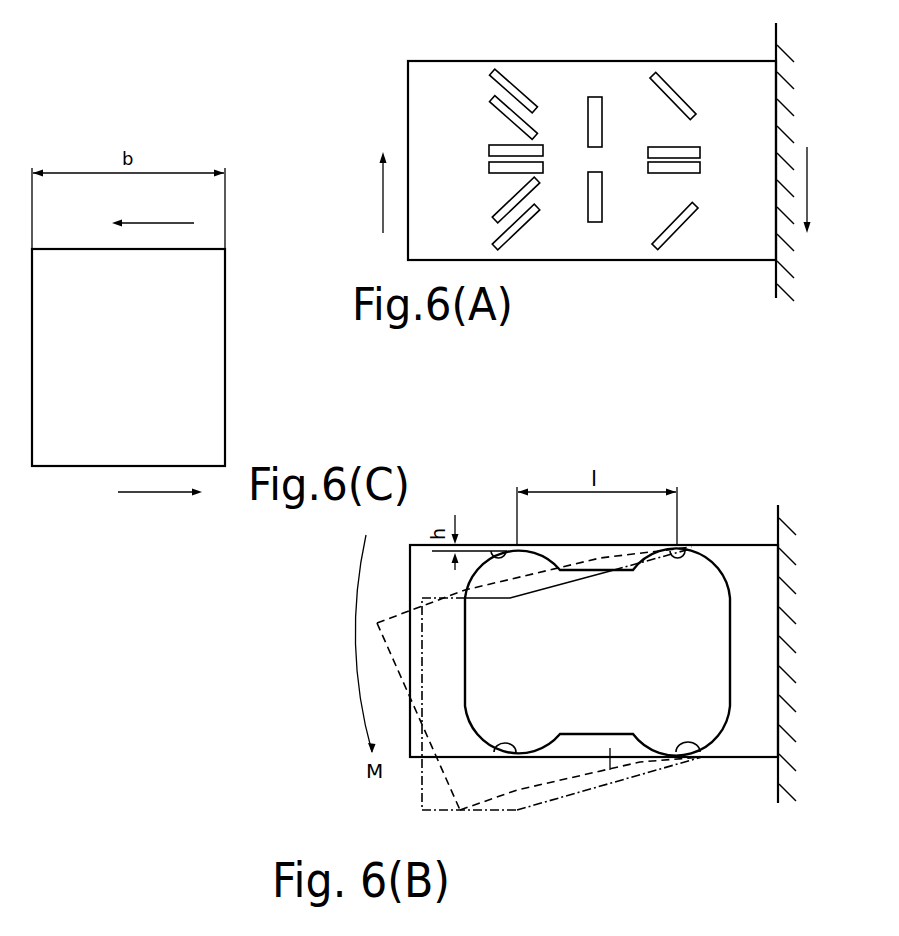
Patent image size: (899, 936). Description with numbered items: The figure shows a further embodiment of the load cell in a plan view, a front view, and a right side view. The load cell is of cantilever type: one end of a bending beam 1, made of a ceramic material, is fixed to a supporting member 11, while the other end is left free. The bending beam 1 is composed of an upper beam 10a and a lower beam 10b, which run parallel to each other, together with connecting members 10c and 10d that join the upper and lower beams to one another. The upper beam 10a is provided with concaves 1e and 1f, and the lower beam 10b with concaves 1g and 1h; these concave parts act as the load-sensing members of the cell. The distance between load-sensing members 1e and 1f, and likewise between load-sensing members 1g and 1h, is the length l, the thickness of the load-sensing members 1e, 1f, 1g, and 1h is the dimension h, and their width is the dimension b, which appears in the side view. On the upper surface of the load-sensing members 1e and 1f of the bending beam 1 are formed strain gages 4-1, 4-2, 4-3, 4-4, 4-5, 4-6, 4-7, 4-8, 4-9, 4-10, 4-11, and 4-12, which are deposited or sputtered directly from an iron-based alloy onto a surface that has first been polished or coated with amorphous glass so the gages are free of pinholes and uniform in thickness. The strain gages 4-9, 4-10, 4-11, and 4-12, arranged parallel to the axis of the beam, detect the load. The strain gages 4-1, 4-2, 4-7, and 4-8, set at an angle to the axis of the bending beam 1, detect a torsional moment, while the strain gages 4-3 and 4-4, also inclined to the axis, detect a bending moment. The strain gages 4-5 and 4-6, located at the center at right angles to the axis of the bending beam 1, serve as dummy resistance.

In FIG. 6A, the bending beam 1 is at (697, 49).
In FIG. 6C, the bending beam 1 is at (238, 421).
In FIG. 6B, the bending beam 1 is at (735, 538).
In FIG. 6A, the supporting member 11 is at (793, 127).
In FIG. 6B, the supporting member 11 is at (792, 600).
In FIG. 6A, the strain gage 4-1 is at (484, 89).
In FIG. 6A, the strain gage 4-2 is at (486, 227).
In FIG. 6A, the strain gage 4-3 is at (484, 118).
In FIG. 6A, the strain gage 4-4 is at (486, 200).
In FIG. 6A, the strain gage 4-5 is at (577, 112).
In FIG. 6A, the strain gage 4-6 is at (577, 197).
In FIG. 6A, the strain gage 4-7 is at (654, 94).
In FIG. 6A, the strain gage 4-8 is at (684, 225).
In FIG. 6A, the strain gage 4-9 is at (487, 151).
In FIG. 6A, the strain gage 4-10 is at (487, 167).
In FIG. 6A, the strain gage 4-11 is at (670, 139).
In FIG. 6A, the strain gage 4-12 is at (670, 181).
In FIG. 6B, the concave 1e is at (499, 560).
In FIG. 6B, the concave 1f is at (686, 556).
In FIG. 6B, the concave 1g is at (511, 740).
In FIG. 6B, the concave 1h is at (705, 742).
In FIG. 6B, the upper beam 10a is at (634, 556).
In FIG. 6B, the lower beam 10b is at (611, 760).
In FIG. 6B, the connecting member 10c is at (452, 657).
In FIG. 6B, the connecting member 10d is at (762, 643).